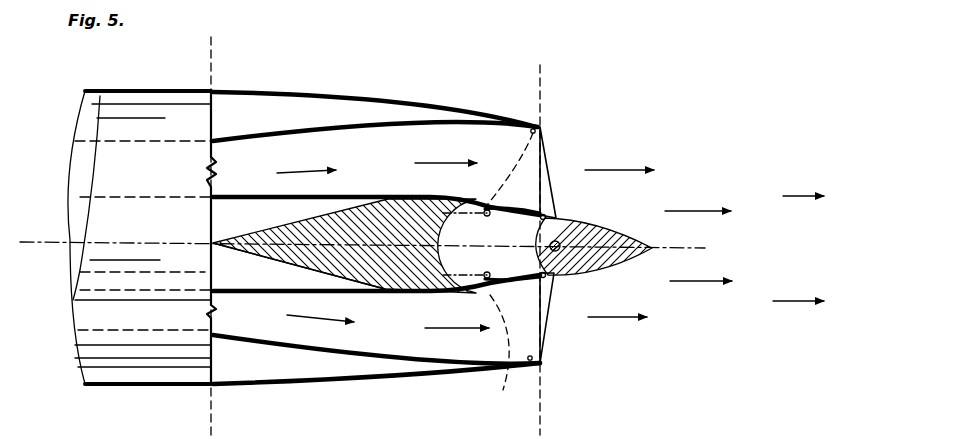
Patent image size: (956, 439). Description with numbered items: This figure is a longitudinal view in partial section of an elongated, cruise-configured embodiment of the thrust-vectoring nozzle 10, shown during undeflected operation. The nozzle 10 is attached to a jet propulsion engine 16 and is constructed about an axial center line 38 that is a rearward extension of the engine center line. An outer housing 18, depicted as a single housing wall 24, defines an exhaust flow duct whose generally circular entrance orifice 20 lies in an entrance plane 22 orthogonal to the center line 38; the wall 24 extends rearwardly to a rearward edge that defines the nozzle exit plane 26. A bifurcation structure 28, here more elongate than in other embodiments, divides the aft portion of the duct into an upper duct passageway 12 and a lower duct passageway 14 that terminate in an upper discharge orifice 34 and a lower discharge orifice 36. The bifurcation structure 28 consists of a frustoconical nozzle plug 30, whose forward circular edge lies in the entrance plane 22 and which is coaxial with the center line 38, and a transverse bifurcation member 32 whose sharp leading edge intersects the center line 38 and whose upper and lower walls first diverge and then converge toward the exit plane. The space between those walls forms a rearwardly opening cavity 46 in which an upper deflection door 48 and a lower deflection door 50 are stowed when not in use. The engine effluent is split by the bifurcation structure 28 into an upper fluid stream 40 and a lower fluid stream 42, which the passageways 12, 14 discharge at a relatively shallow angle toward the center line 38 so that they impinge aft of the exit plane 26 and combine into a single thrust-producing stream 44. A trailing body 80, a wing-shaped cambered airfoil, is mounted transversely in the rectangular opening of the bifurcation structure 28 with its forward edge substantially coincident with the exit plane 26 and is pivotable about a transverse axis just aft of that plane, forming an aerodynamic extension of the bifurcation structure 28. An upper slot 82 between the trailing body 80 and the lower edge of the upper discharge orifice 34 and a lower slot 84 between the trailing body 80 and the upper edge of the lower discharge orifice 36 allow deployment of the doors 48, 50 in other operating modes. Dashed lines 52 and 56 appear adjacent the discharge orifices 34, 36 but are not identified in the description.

The nozzle 10 is at (360, 385).
The upper duct passageway 12 is at (476, 135).
The lower duct passageway 14 is at (455, 348).
The jet propulsion engine 16 is at (157, 93).
The outer housing 18 is at (297, 95).
The entrance orifice 20 is at (211, 128).
The entrance plane 22 is at (211, 40).
The housing wall 24 is at (384, 123).
The nozzle exit plane 26 is at (543, 72).
The bifurcation structure 28 is at (272, 262).
The nozzle plug 30 is at (228, 197).
The transverse bifurcation member 32 is at (410, 212).
The upper discharge orifice 34 is at (543, 175).
The lower discharge orifice 36 is at (545, 345).
The axial center line 38 is at (38, 242).
The upper fluid stream 40 is at (290, 171).
The lower fluid stream 42 is at (445, 328).
The combined fluid stream 44 is at (748, 228).
The cavity 46 is at (460, 234).
The upper deflection door 48 is at (490, 218).
The lower deflection door 50 is at (490, 262).
The upper flap path 52 is at (518, 118).
The lower flap path 56 is at (511, 352).
The trailing body 80 is at (585, 228).
The upper slot 82 is at (560, 215).
The lower slot 84 is at (560, 275).